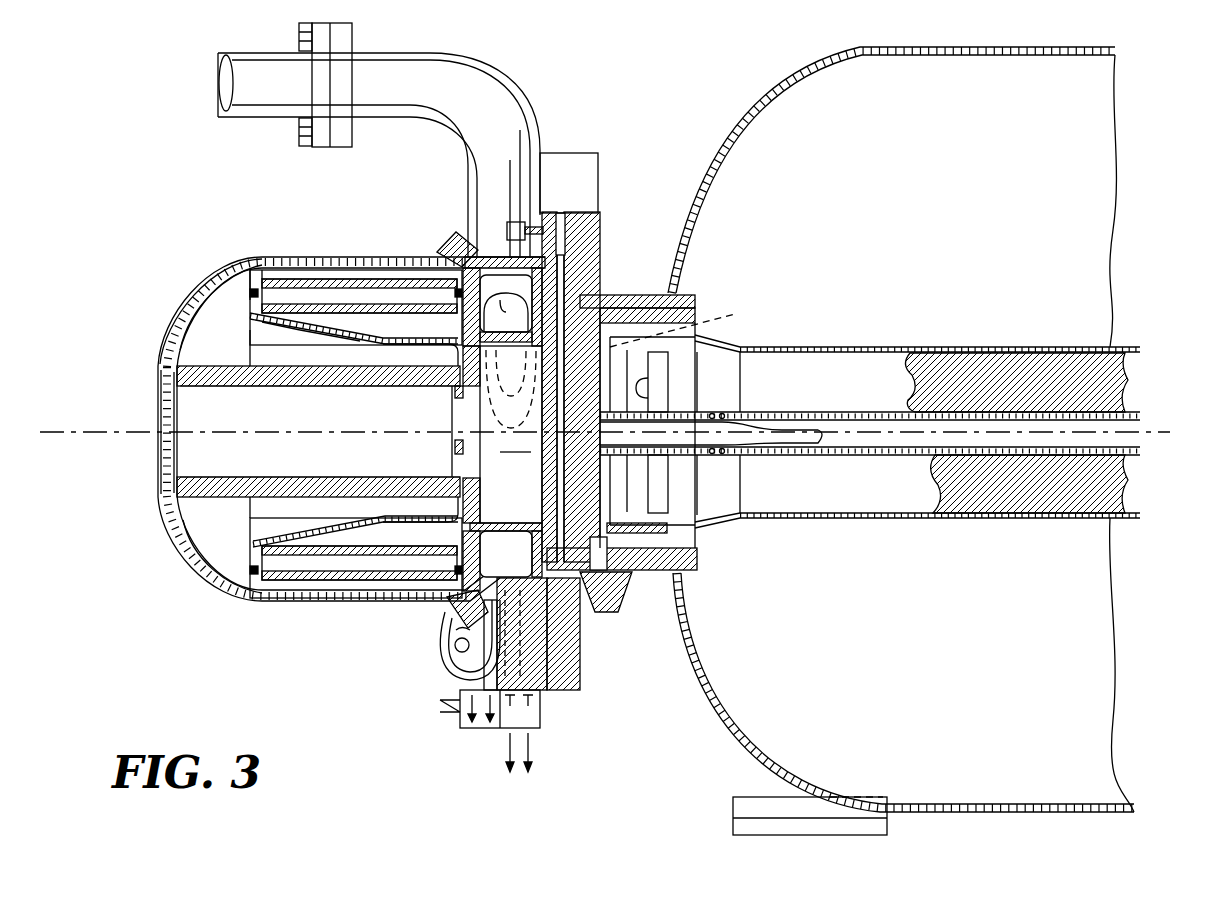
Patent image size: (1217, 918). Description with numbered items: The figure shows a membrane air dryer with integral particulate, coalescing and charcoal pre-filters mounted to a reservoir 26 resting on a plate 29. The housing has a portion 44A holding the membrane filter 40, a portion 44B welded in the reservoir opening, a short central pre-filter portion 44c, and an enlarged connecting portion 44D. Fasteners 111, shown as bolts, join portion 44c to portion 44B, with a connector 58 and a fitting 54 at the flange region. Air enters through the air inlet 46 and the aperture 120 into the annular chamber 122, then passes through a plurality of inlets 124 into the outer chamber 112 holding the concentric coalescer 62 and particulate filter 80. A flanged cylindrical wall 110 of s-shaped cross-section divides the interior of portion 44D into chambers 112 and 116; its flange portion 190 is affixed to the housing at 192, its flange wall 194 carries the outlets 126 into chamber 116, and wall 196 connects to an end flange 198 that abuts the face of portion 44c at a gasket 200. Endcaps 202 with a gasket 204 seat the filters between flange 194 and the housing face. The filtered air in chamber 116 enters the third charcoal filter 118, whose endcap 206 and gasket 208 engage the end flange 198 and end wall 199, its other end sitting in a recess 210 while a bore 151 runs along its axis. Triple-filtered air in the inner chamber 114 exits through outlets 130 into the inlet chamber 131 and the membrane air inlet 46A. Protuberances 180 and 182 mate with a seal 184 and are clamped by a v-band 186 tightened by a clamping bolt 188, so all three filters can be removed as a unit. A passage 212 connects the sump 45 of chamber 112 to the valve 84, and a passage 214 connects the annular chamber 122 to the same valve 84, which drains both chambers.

The reservoir 26 is at (892, 48).
The mounting plate 29 is at (778, 835).
The membrane filter 40 is at (1140, 363).
The housing portion 44A is at (925, 350).
The housing portion 44B is at (597, 297).
The pre-filter housing portion 44c is at (473, 140).
The connecting housing portion 44D is at (338, 275).
The sump 45 is at (330, 552).
The air inlet 46 is at (345, 80).
The air inlet of membrane separator 46A is at (662, 398).
The fitting 54 is at (612, 602).
The connector block 58 is at (598, 178).
The coalescer 62 is at (300, 582).
The filter 80 is at (380, 557).
The valve 84 is at (480, 725).
The flanged cylindrical wall 110 is at (304, 327).
The fasteners 111 is at (522, 212).
The outer chamber 112 is at (324, 272).
The inner chamber 114 is at (502, 434).
The chamber 116 is at (187, 335).
The third filter 118 is at (270, 388).
The aperture 120 is at (500, 300).
The annular chamber 122 is at (524, 522).
The inlets 124 is at (420, 272).
The outlets 126 is at (215, 268).
The outlets 130 is at (639, 425).
The inlet chamber 131 is at (642, 340).
The bore 151 is at (370, 340).
The protuberance 180 is at (455, 590).
The protuberance 182 is at (462, 655).
The seal 184 is at (440, 620).
The v-band 186 is at (440, 668).
The clamping bolt 188 is at (452, 650).
The flange portion 190 is at (291, 278).
The weld location 192 is at (252, 282).
The flange wall 194 is at (272, 318).
The wall 196 is at (364, 321).
The end flange 198 is at (452, 350).
The end wall 199 is at (455, 398).
The gasket 200 is at (460, 508).
The endcaps 202 is at (432, 262).
The gasket 204 is at (250, 292).
The endcap 206 is at (460, 477).
The gasket 208 is at (455, 447).
The recess 210 is at (160, 457).
The passage 212 is at (580, 682).
The passage 214 is at (573, 652).